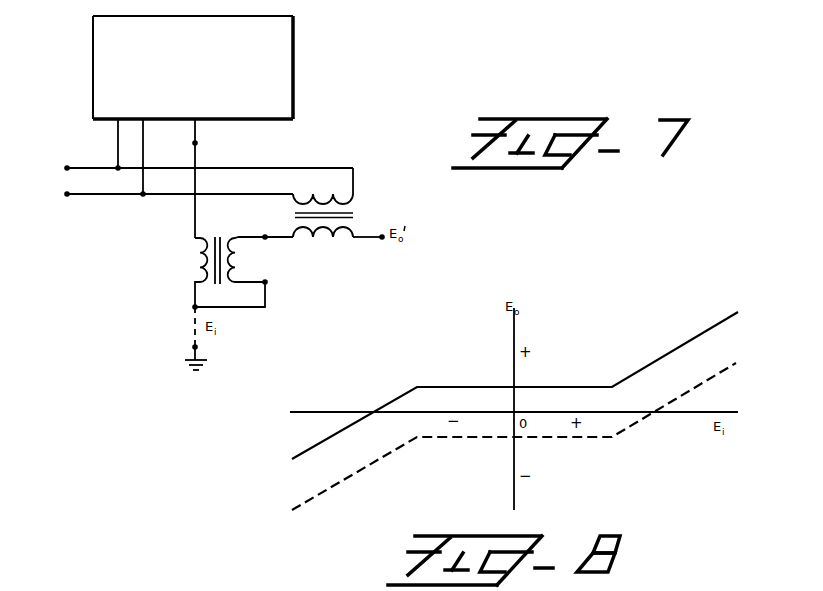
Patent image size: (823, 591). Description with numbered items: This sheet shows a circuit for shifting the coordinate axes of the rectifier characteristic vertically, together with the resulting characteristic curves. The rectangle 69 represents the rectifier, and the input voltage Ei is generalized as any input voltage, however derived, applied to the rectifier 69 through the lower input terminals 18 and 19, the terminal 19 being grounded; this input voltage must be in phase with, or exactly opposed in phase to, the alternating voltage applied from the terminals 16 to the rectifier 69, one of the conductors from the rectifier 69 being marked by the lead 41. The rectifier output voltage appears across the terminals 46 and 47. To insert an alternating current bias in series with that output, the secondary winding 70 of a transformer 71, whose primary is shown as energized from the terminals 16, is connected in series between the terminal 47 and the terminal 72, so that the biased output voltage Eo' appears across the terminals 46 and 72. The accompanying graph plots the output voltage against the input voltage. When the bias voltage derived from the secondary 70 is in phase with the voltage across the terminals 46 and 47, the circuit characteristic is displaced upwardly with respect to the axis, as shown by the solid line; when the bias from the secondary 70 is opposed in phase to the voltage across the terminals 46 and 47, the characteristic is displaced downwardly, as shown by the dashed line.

The rectifier 69 is at (294, 63).
The lead 41 is at (196, 143).
The terminals 16 is at (67, 168).
The input terminal 18 is at (192, 307).
The ground terminal 19 is at (192, 347).
The terminal 46 is at (268, 284).
The terminal 47 is at (264, 236).
The secondary winding 70 is at (322, 240).
The transformer 71 is at (350, 214).
The terminal 72 is at (382, 238).